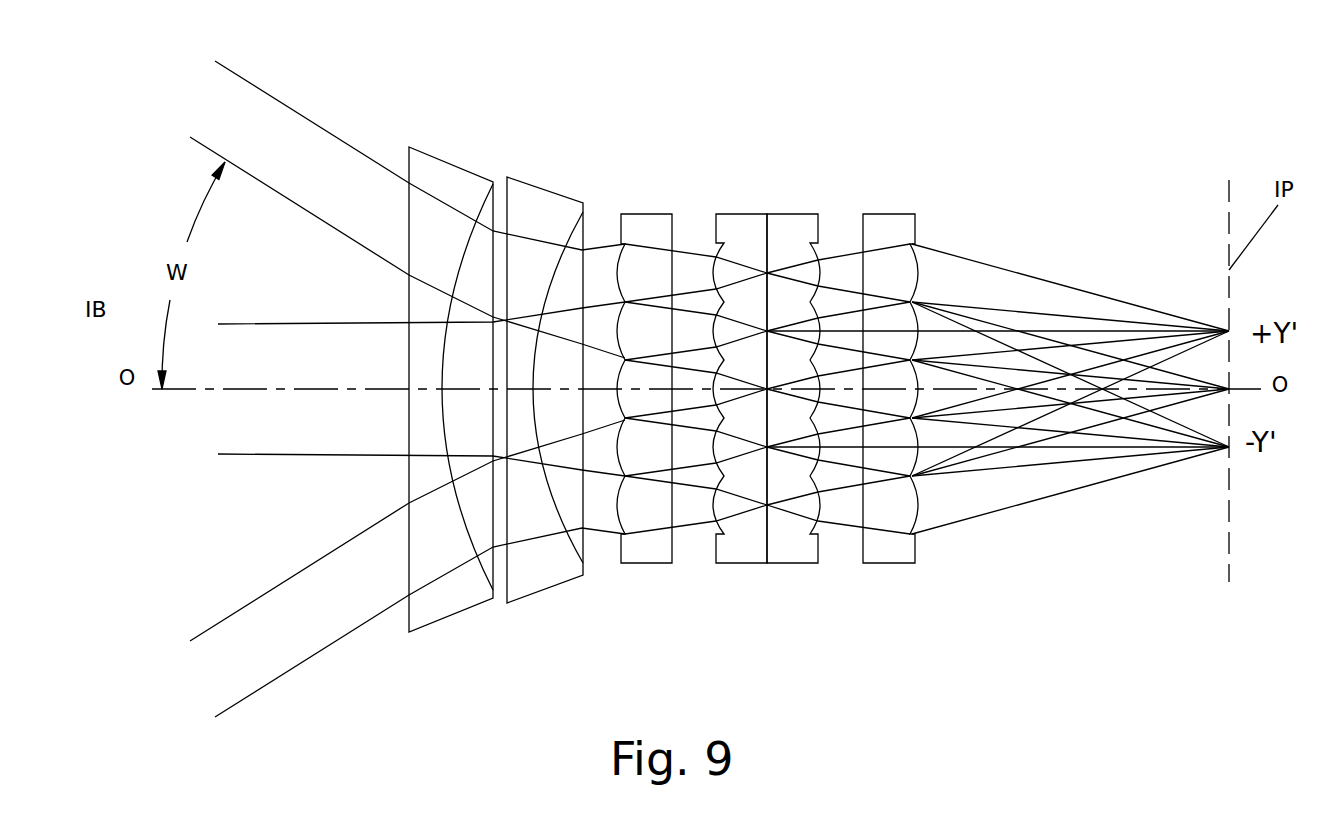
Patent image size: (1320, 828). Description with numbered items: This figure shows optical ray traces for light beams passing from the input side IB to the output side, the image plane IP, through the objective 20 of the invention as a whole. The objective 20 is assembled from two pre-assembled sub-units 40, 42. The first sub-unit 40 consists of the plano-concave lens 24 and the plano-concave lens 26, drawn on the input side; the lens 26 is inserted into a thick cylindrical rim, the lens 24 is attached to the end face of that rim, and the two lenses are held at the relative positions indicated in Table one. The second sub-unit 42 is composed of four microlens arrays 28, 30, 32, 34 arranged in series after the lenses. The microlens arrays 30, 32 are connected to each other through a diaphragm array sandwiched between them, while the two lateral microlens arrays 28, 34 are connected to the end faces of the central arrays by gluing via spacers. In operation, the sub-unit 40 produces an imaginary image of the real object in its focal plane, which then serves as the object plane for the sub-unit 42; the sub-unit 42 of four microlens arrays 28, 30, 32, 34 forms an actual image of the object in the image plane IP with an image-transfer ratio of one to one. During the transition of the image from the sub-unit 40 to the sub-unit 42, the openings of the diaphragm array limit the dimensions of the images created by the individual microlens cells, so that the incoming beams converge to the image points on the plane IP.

The objective 20 is at (771, 78).
The plano-concave lens 24 is at (448, 177).
The plano-concave lens 26 is at (540, 212).
The microlens array 28 is at (642, 553).
The microlens array 30 is at (750, 547).
The microlens array 32 is at (801, 557).
The microlens array 34 is at (885, 553).
The sub-unit 40 is at (498, 106).
The sub-unit 42 is at (848, 184).